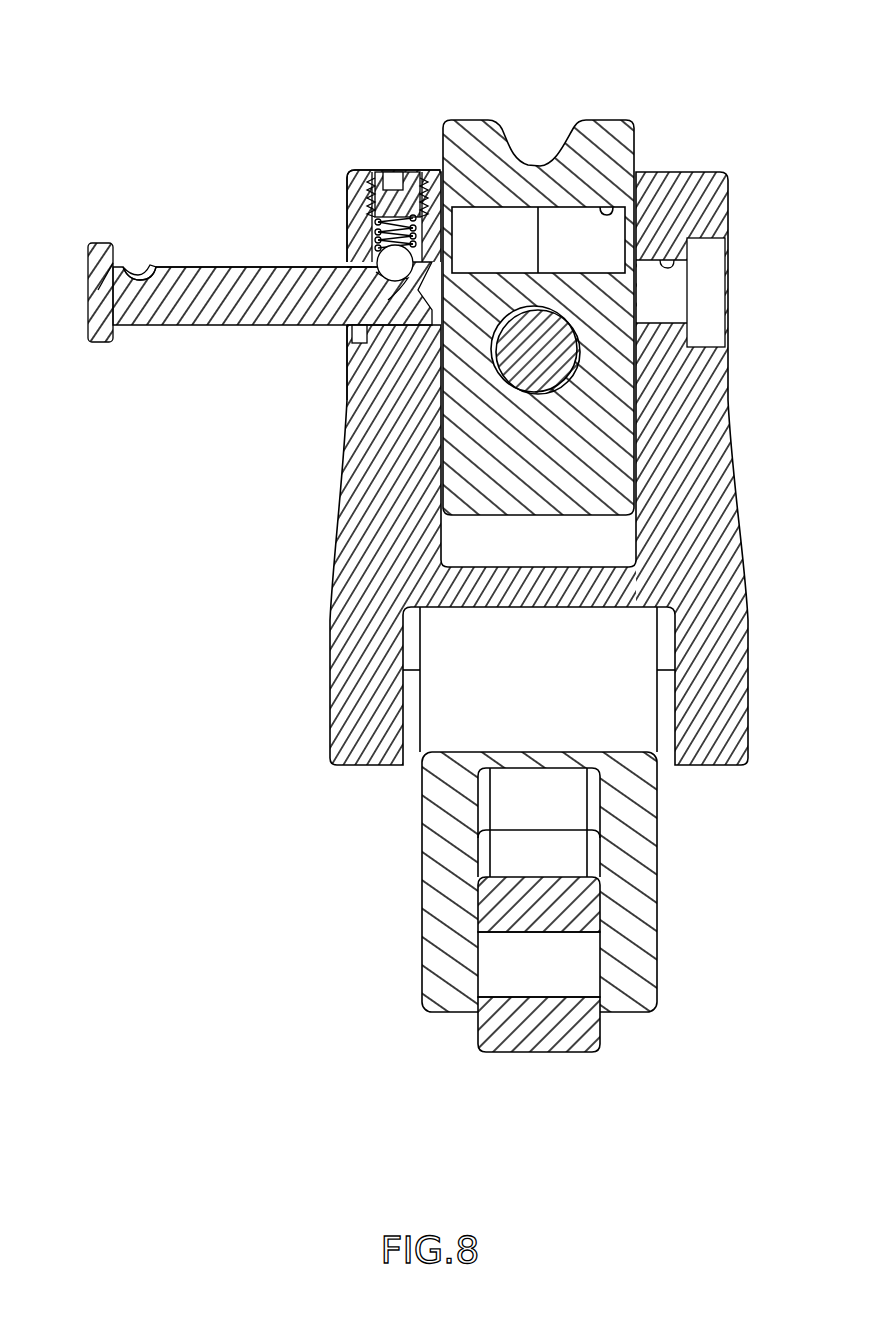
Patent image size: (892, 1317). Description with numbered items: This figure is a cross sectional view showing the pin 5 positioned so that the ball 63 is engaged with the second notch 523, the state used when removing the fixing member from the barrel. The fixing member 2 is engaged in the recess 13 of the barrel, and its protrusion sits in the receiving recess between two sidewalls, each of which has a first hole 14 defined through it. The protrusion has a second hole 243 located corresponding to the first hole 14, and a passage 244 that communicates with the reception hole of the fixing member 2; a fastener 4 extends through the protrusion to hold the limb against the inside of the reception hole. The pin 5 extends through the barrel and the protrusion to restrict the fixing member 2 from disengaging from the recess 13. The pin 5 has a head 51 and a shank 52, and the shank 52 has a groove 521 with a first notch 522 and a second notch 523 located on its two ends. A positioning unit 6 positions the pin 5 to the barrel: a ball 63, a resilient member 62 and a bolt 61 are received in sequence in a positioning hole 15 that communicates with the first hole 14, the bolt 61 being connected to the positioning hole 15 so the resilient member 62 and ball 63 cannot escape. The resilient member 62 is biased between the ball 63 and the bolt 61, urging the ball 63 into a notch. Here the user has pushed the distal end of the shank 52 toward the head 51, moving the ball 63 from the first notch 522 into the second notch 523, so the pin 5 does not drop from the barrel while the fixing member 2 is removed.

The fixing member 2 is at (591, 261).
The fastener 4 is at (543, 357).
The pin 5 is at (244, 325).
The positioning unit 6 is at (331, 195).
The recess 13 is at (612, 530).
The first hole 14 is at (688, 265).
The positioning hole 15 is at (377, 204).
The head 51 is at (96, 345).
The shank 52 is at (215, 312).
The bolt 61 is at (393, 197).
The resilient member 62 is at (380, 232).
The ball 63 is at (345, 244).
The second hole 243 is at (615, 212).
The passage 244 is at (535, 394).
The groove 521 is at (205, 268).
The first notch 522 is at (142, 268).
The second notch 523 is at (350, 327).